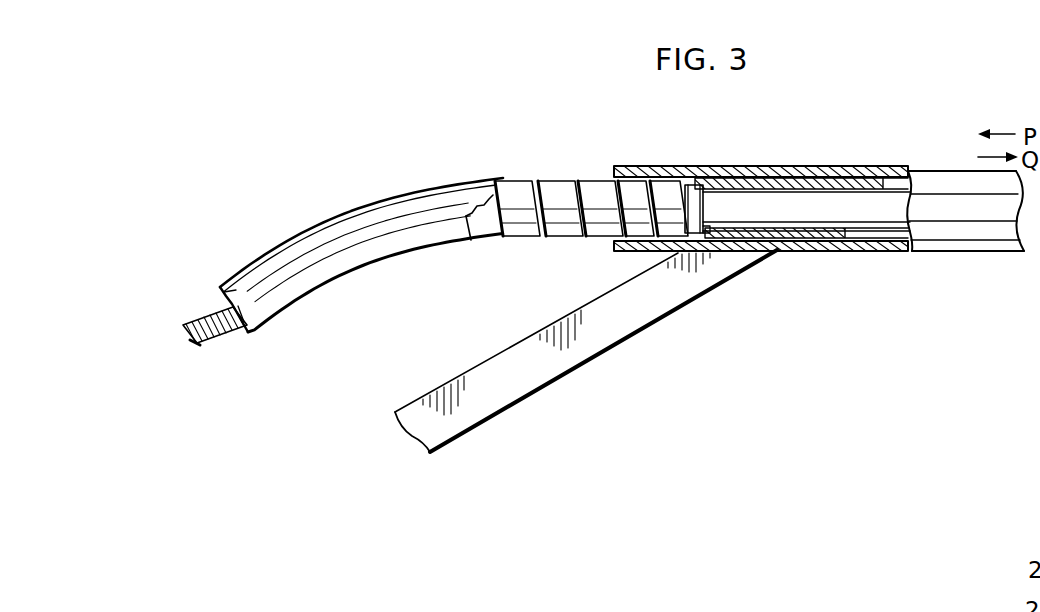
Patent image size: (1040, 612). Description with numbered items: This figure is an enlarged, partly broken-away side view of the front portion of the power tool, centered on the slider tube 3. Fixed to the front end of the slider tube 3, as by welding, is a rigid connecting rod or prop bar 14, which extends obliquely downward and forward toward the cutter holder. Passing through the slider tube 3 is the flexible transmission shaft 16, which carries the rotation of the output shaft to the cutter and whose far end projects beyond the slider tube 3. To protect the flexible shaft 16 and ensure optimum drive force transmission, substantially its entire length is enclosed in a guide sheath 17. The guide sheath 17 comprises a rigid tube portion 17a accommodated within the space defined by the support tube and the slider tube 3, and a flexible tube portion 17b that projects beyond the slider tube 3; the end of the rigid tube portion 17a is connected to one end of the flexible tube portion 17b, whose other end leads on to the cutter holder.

The slider tube 3 is at (845, 168).
The prop bar 14 is at (662, 303).
The flexible transmission shaft 16 is at (200, 313).
The guide sheath 17 is at (908, 186).
The rigid tube portion 17a is at (884, 190).
The flexible tube portion 17b is at (385, 206).